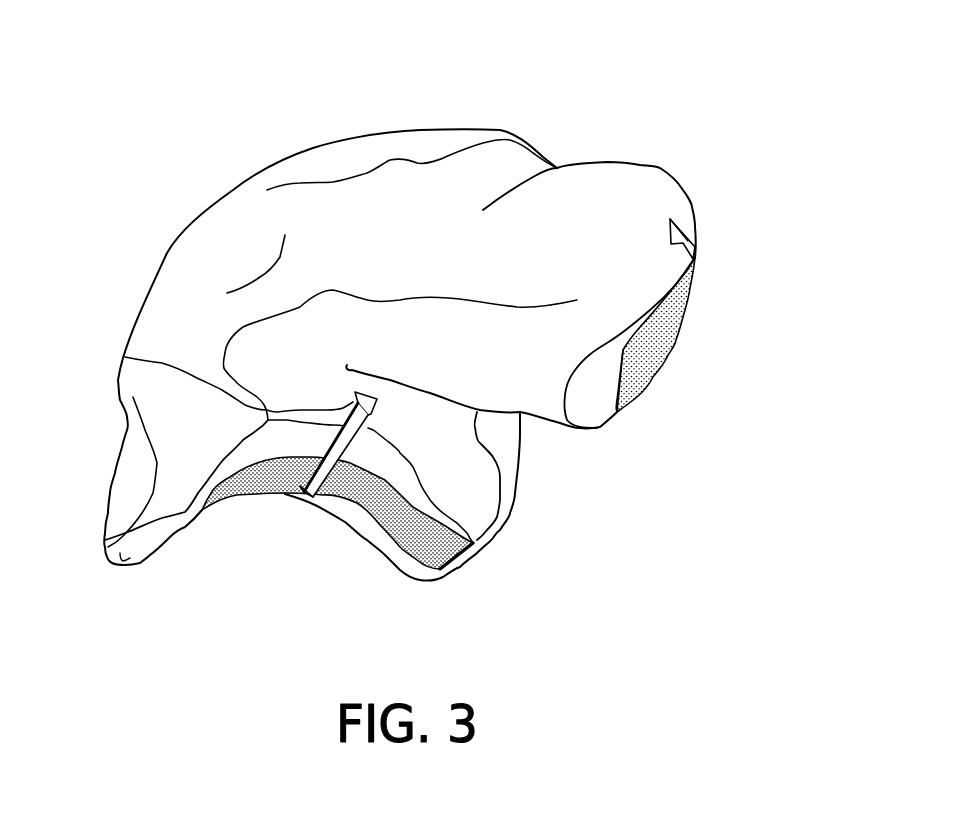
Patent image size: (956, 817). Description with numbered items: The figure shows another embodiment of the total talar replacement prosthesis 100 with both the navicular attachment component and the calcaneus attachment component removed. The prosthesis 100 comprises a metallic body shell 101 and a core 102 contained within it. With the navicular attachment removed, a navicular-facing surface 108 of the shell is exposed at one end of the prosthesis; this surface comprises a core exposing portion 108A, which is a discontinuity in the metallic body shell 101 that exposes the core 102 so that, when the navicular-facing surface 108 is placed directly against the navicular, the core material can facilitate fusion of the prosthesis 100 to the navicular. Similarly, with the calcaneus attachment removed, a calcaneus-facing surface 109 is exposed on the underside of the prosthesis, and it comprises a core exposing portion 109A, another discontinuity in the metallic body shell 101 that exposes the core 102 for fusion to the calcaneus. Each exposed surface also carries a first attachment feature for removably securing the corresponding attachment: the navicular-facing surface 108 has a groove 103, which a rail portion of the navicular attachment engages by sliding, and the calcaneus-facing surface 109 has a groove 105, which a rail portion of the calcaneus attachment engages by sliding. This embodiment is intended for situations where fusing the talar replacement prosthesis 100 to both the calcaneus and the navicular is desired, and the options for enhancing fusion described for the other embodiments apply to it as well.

The total talar replacement prosthesis 100 is at (564, 106).
The metallic body shell 101 is at (203, 252).
The core 102 is at (640, 373).
The groove 103 is at (677, 230).
The groove 105 is at (125, 357).
The navicular-facing surface 108 is at (608, 419).
The core exposing portion 108A is at (680, 347).
The calcaneus-facing surface 109 is at (425, 473).
The core exposing portion 109A is at (347, 500).